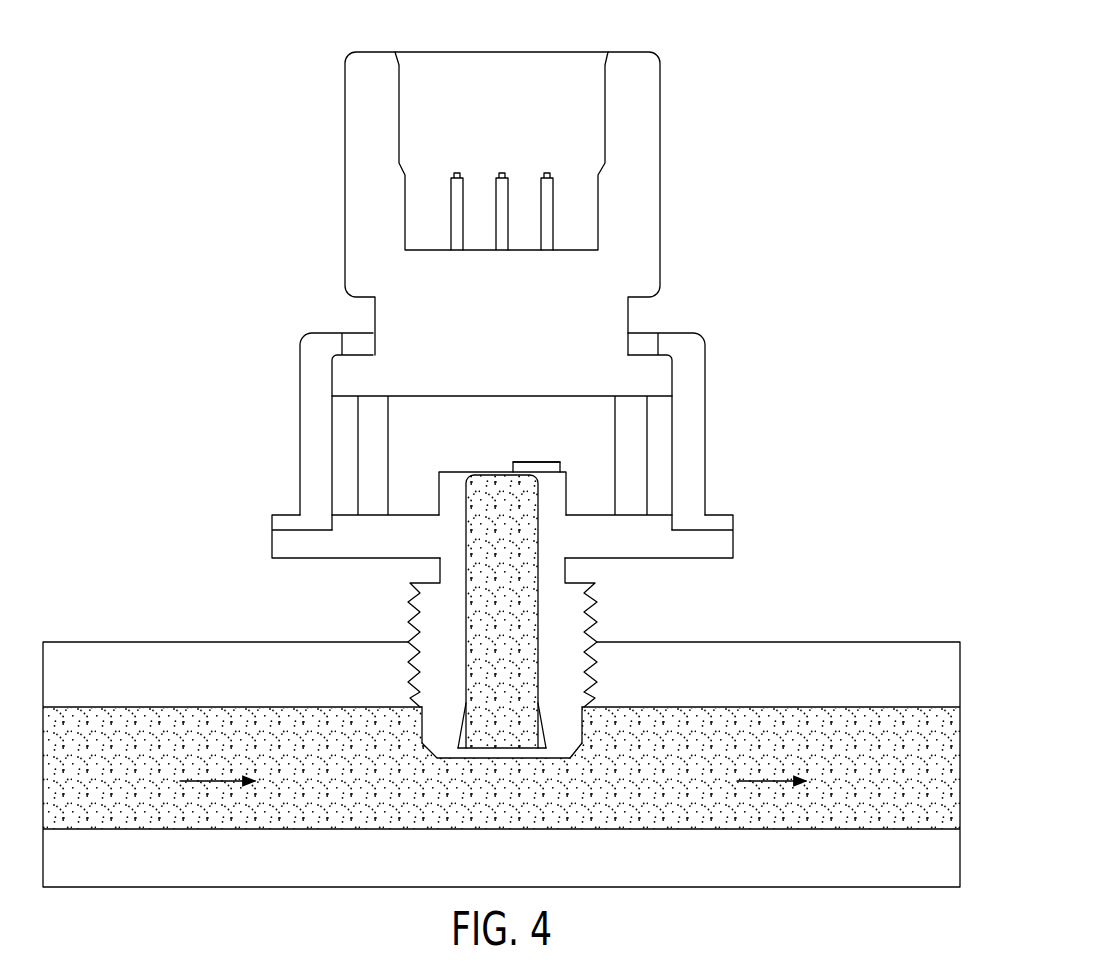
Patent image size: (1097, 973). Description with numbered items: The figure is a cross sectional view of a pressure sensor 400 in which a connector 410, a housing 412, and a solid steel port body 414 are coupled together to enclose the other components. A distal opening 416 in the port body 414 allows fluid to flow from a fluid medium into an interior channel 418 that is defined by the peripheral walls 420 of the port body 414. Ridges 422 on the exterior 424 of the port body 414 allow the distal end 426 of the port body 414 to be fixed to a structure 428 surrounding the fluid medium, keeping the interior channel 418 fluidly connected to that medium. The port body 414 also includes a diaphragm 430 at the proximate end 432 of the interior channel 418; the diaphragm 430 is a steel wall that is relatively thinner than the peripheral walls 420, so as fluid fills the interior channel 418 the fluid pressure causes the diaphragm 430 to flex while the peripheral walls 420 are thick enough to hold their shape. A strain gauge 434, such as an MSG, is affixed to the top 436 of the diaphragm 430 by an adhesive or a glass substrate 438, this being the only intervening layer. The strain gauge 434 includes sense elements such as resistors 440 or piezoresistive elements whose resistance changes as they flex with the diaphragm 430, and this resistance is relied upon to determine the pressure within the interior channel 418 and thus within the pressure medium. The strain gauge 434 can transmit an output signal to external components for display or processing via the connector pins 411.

The pressure sensor 400 is at (768, 66).
The connector 410 is at (358, 150).
The connector pins 411 is at (547, 175).
The housing 412 is at (693, 422).
The port body 414 is at (298, 556).
The distal opening 416 is at (506, 765).
The interior channel 418 is at (488, 637).
The peripheral walls 420 is at (470, 683).
The ridges 422 is at (412, 604).
The exterior 424 is at (585, 722).
The distal end 426 is at (575, 758).
The structure 428 is at (842, 708).
The diaphragm 430 is at (508, 478).
The proximate end 432 is at (484, 478).
The strain gauge 434 is at (524, 463).
The top 436 is at (487, 471).
The glass substrate 438 is at (512, 471).
The resistors 440 is at (542, 462).